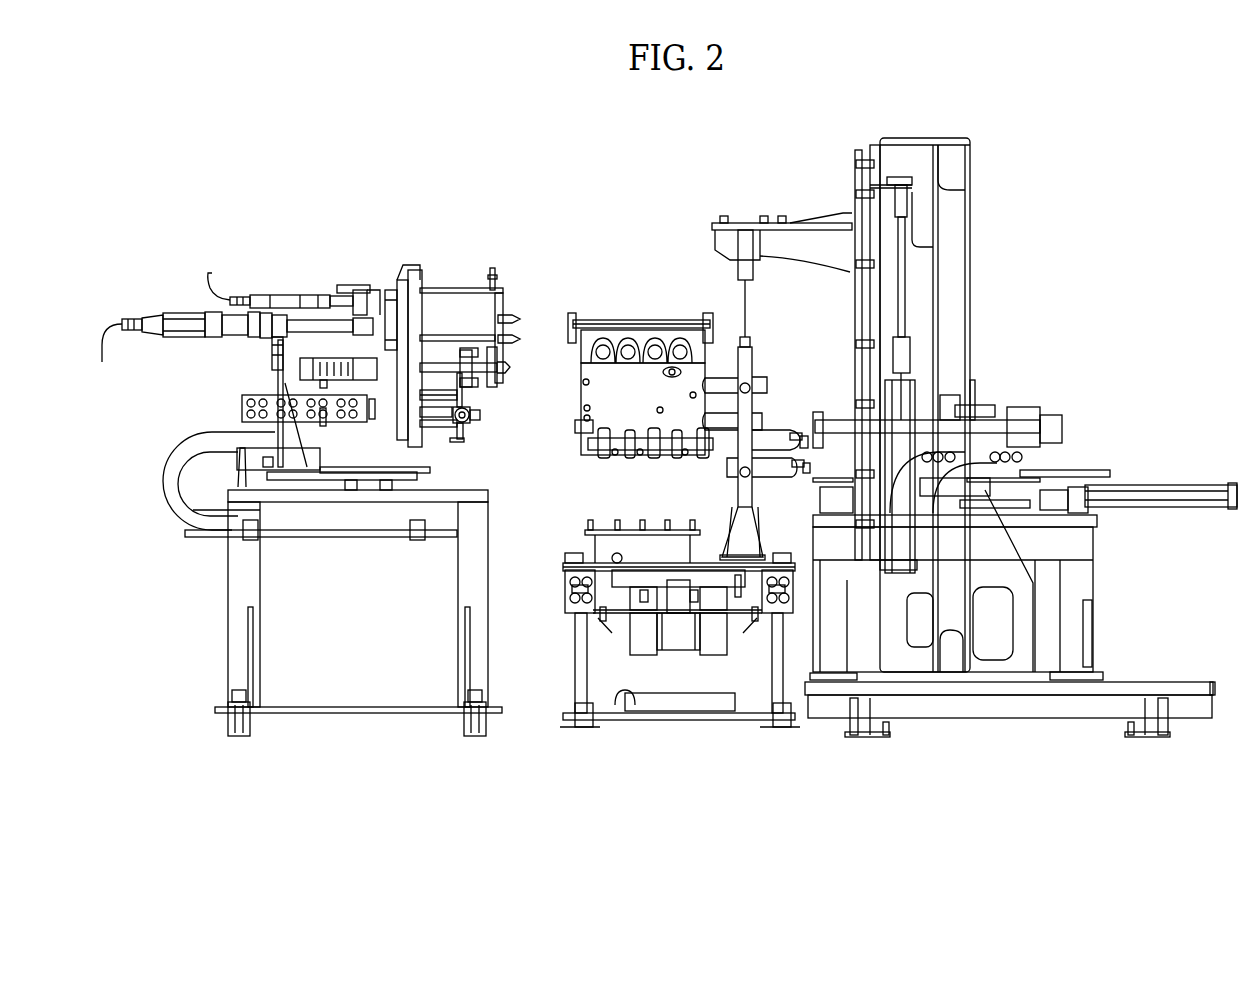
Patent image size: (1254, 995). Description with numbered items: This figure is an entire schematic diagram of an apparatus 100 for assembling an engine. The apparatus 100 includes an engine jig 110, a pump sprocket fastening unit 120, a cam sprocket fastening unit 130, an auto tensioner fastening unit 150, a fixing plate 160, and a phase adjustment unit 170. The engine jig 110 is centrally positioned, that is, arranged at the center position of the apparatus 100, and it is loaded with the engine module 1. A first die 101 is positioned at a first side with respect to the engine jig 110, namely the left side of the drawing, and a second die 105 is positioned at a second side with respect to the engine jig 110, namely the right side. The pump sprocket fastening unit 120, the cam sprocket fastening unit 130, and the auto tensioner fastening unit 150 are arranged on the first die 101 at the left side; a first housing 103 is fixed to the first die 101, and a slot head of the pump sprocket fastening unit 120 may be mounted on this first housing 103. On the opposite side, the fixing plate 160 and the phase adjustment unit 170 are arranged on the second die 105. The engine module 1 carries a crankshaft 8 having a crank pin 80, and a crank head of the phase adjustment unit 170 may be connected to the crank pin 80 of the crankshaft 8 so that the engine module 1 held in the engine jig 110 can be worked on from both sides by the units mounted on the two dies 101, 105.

The apparatus for assembling an engine 100 is at (270, 150).
The first die 101 is at (238, 589).
The first housing 103 is at (392, 292).
The cam sprocket fastening unit 130 is at (445, 290).
The auto tensioner fastening unit 150 is at (524, 290).
The pump sprocket fastening unit 120 is at (470, 432).
The engine module 1 is at (597, 302).
The crankshaft 8 is at (577, 433).
The crank pin 80 is at (690, 456).
The fixing plate 160 is at (781, 240).
The engine jig 110 is at (628, 614).
The second die 105 is at (1050, 578).
The phase adjustment unit 170 is at (996, 396).